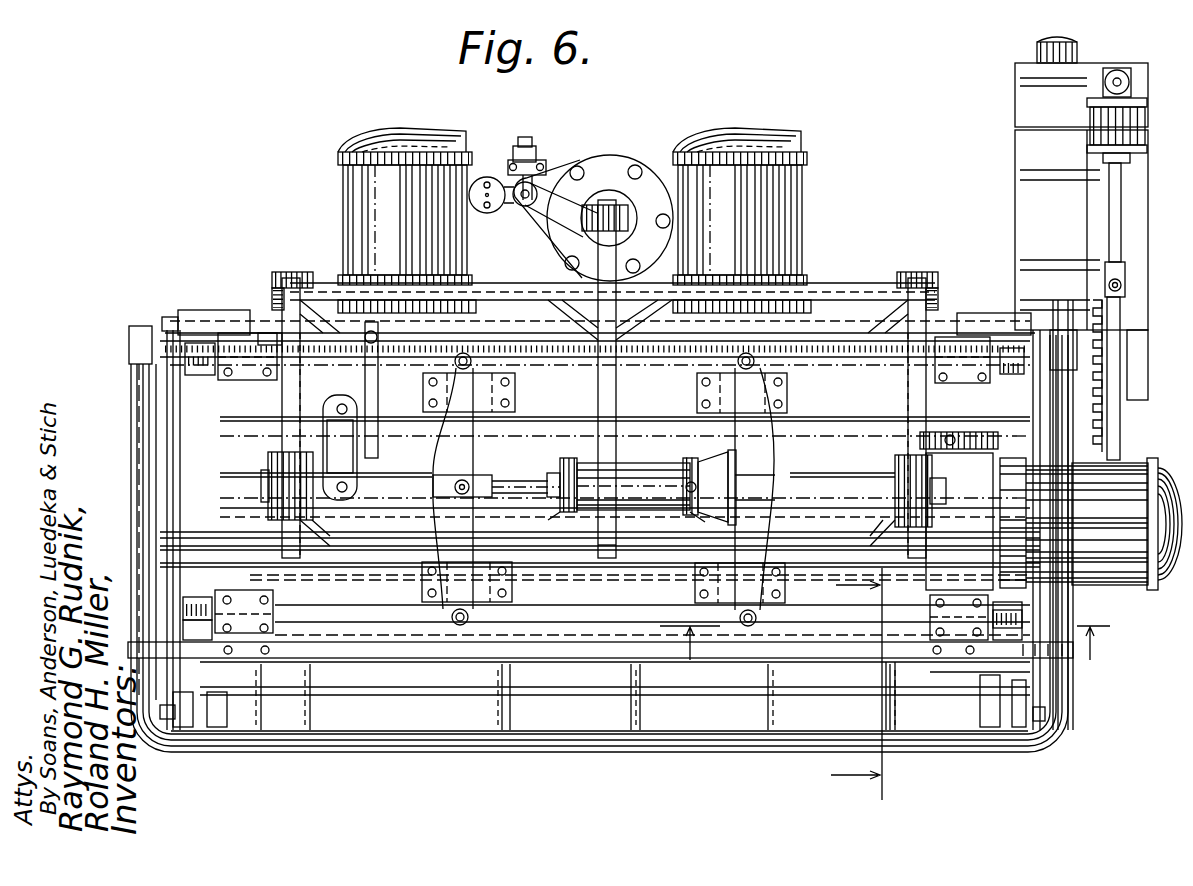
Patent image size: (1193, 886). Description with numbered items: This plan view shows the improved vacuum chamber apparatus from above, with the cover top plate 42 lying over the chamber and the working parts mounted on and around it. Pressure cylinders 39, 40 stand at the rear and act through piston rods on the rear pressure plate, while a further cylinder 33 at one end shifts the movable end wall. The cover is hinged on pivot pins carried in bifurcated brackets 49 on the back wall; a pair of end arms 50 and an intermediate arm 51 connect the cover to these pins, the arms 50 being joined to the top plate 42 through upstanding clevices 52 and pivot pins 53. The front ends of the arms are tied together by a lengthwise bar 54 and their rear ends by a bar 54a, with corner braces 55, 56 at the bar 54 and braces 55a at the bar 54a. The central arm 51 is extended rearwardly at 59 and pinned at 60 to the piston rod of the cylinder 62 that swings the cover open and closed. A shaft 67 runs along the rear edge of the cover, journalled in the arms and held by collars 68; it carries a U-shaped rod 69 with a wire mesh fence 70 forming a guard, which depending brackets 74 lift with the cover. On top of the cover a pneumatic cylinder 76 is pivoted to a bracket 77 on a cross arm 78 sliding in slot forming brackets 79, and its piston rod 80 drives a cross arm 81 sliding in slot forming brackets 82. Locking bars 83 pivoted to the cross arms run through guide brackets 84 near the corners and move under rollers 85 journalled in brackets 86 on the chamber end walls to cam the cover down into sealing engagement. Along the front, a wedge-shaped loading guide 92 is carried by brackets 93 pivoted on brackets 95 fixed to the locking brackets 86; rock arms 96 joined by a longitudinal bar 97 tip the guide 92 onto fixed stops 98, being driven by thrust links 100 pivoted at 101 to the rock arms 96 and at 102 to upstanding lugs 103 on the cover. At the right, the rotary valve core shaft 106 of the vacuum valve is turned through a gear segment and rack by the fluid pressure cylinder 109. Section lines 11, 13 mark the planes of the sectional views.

The section line 11 is at (856, 684).
The section line 13 is at (885, 643).
The pneumatic or hydraulic cylinder 33 is at (1102, 558).
The pressure cylinder 39 is at (782, 230).
The pressure cylinder 40 is at (358, 189).
The main or top plate 42 is at (580, 638).
The bifurcated brackets 49 is at (283, 278).
The arms or brackets 50 is at (292, 414).
The intermediate arm or bracket 51 is at (598, 396).
The upstanding clevice 52 is at (272, 472).
The pivot pins 53 is at (264, 488).
The longitudinal lengthwise extending bar 54 is at (601, 549).
The bar 54a is at (840, 282).
The corner braces 55 is at (320, 530).
The braces 55a is at (628, 322).
The corner braces 56 is at (558, 520).
The rearward extension of central bracket 59 is at (646, 253).
The pin 60 is at (618, 206).
The pneumatic or hydraulic cylinder 62 is at (616, 168).
The shaft 67 is at (523, 346).
The collars 68 is at (272, 333).
The U-shaped rod 69 is at (136, 392).
The wire mesh fence 70 is at (660, 746).
The depending brackets 74 is at (130, 642).
The pneumatic cylinder 76 is at (628, 470).
The bracket 77 is at (712, 470).
The cross arm 78 is at (754, 458).
The slot forming brackets 79 is at (700, 393).
The piston rod 80 is at (518, 476).
The cross arm 81 is at (452, 440).
The slot forming brackets 82 is at (507, 395).
The locking bars 83 is at (361, 612).
The guide brackets 84 is at (241, 381).
The rollers 85 is at (205, 620).
The brackets 86 is at (198, 376).
The loading guide 92 is at (462, 712).
The brackets 93 is at (985, 722).
The brackets 95 is at (985, 672).
The rock arms 96 is at (202, 746).
The longitudinal bar 97 is at (368, 695).
The fixed stops 98 is at (886, 706).
The thrust links 100 is at (170, 438).
The pivot connection 101 is at (1045, 713).
The pivot connection 102 is at (165, 317).
The upstanding lugs 103 is at (200, 309).
The rotary valve core shaft 106 is at (1100, 318).
The fluid pressure cylinder 109 is at (1108, 145).